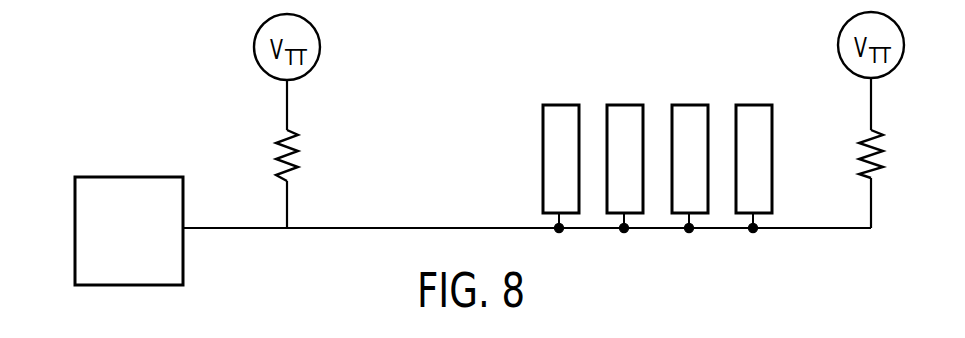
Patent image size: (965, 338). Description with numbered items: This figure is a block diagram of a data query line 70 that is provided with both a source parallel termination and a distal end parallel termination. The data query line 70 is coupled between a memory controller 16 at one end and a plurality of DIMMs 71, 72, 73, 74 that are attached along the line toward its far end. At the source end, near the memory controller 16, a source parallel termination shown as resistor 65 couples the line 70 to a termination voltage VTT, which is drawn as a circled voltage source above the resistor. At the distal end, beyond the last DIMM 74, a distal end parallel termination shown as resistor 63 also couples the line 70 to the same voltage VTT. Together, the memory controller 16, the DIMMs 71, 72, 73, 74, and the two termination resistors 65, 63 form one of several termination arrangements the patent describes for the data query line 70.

The memory controller 16 is at (130, 176).
The resistor 63 is at (880, 147).
The resistor 65 is at (297, 147).
The data query line 70 is at (370, 228).
The DIMM 71 is at (562, 104).
The DIMM 72 is at (627, 104).
The DIMM 73 is at (692, 104).
The DIMM 74 is at (756, 104).